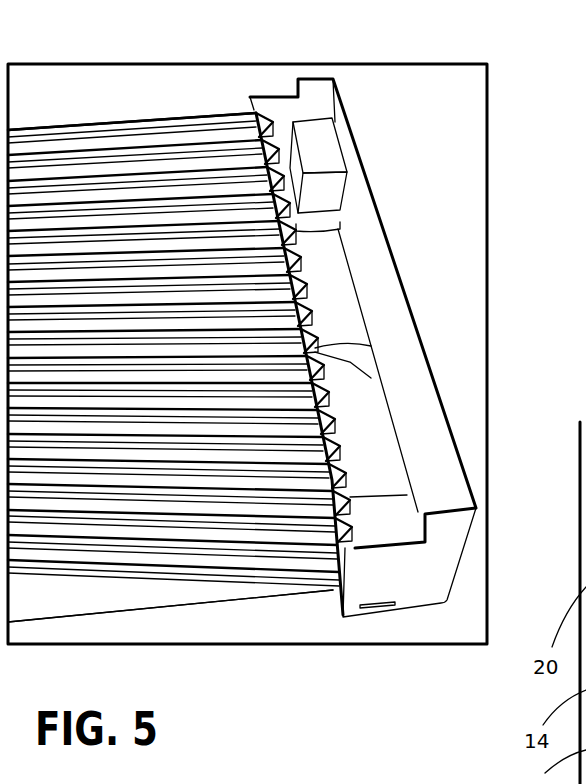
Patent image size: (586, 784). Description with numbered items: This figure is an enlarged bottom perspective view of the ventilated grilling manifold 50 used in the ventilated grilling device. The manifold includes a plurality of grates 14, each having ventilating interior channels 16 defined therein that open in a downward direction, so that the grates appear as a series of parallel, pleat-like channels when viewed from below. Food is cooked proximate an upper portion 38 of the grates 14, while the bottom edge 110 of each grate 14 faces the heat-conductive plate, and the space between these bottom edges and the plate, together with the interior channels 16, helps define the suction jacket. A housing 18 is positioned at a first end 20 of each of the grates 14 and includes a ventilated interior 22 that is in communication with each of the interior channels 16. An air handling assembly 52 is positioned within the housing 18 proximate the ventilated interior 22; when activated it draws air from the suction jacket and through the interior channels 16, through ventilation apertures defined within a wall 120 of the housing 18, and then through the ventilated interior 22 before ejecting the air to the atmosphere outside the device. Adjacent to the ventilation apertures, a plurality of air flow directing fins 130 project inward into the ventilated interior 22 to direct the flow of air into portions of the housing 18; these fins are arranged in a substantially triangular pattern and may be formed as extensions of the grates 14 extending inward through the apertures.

The ventilated grilling manifold 50 is at (502, 118).
The bottom edge 110 is at (80, 128).
The interior channels 16 is at (193, 113).
The air handling assembly 52 is at (340, 138).
The ventilated interior 22 is at (358, 227).
The housing 18 is at (402, 260).
The air flow directing fins 130 is at (320, 375).
The wall 120 is at (320, 412).
The grates 14 is at (110, 593).
The upper portion 38 is at (205, 603).
The first end 20 is at (337, 573).